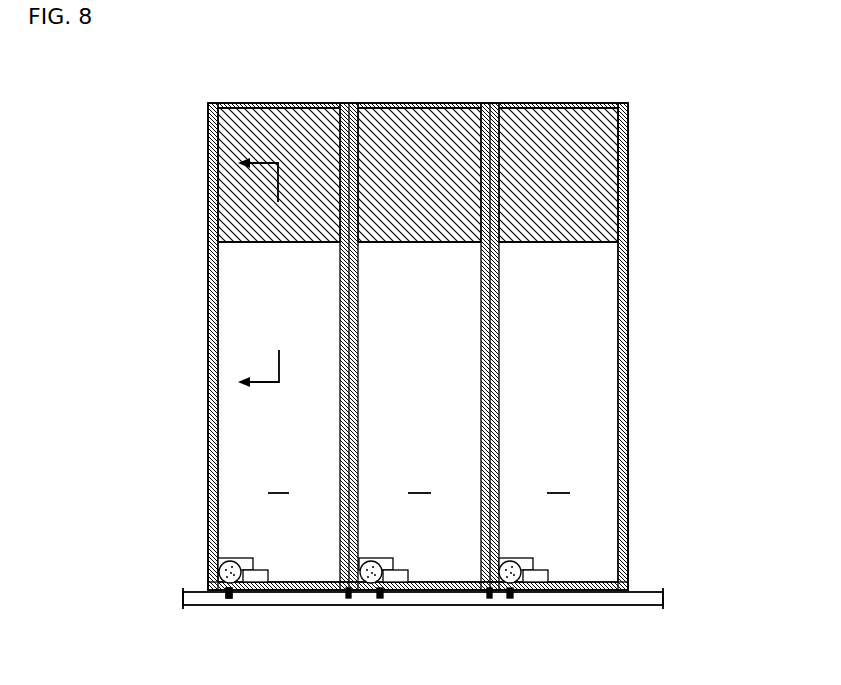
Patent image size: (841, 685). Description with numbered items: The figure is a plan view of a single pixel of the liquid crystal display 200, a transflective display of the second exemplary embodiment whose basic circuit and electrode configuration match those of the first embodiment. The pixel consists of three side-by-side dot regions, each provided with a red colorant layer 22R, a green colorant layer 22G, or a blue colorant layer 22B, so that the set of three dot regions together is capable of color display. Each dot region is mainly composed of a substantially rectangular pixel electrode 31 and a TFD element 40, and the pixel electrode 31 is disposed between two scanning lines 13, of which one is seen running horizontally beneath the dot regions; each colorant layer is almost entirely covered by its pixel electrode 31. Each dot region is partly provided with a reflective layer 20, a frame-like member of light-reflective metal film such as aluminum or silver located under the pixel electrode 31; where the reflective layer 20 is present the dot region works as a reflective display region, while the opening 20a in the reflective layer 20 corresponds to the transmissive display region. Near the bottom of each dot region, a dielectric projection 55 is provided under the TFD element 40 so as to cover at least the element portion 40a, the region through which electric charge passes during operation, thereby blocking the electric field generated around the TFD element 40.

The liquid crystal display 200 is at (440, 356).
The scanning line 13 is at (641, 607).
The reflective layer 20 is at (208, 152).
The opening 20a is at (234, 300).
The red colorant layer 22R is at (272, 104).
The green colorant layer 22G is at (448, 104).
The blue colorant layer 22B is at (607, 104).
The pixel electrode 31 is at (225, 448).
The TFD element 40 is at (256, 598).
The element portion 40a is at (229, 594).
The dielectric projection 55 is at (219, 568).